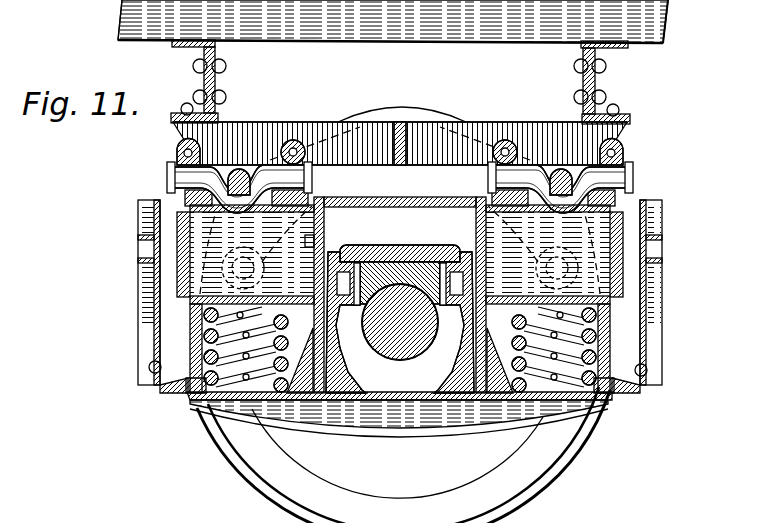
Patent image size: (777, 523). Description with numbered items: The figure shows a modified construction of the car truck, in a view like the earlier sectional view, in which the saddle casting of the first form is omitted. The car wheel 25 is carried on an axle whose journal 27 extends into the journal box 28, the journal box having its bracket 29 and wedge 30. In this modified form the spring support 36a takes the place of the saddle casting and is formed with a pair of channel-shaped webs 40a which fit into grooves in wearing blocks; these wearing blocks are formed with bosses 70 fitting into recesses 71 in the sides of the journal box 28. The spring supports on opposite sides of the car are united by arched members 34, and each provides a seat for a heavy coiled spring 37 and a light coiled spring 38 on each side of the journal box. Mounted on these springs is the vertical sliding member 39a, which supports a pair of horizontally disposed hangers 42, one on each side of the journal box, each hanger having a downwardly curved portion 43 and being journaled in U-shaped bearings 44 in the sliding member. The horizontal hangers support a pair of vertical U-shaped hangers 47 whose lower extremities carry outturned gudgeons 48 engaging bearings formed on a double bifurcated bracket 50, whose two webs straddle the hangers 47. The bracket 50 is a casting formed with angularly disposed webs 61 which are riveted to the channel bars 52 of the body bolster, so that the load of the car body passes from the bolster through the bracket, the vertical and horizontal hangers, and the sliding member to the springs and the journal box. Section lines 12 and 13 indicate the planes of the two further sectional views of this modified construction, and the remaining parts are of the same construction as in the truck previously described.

The channel bar 52 is at (191, 42).
The angularly disposed web 61 is at (216, 88).
The section line 12- 12 is at (377, 65).
The section line 13- 13 is at (442, 322).
The double bifurcated bracket 50 is at (287, 140).
The downwardly curved portion 43 is at (530, 136).
The vertical U-shaped hanger 47 is at (242, 172).
The U-shaped bearing 44 is at (177, 154).
The horizontally disposed hanger 42 is at (170, 178).
The arched member 34 is at (148, 245).
The lower chamber 39a is at (186, 267).
The channel-shaped web 40a is at (313, 237).
The outturned gudgeon 48 is at (400, 332).
The wedge 30 is at (394, 264).
The boss 70 is at (357, 263).
The recess 71 is at (342, 270).
The bracket 29 is at (393, 292).
The journal 27 is at (400, 400).
The spring support 36a is at (336, 405).
The journal box 28 is at (470, 392).
The car wheel 25 is at (538, 470).
The heavy coiled spring 37 is at (184, 388).
The light coiled spring 38 is at (194, 402).